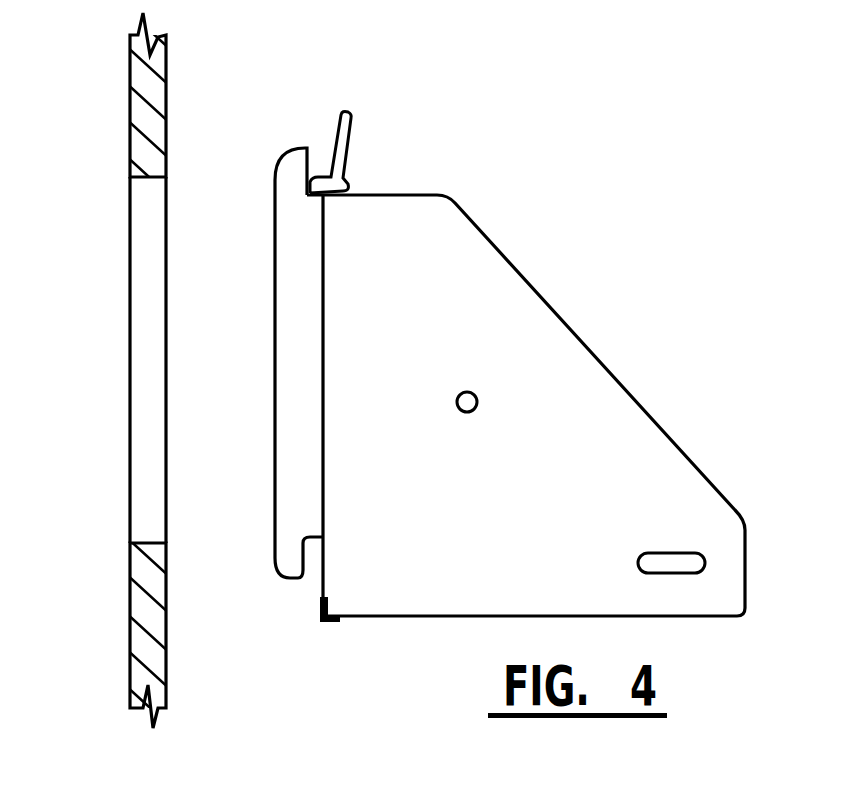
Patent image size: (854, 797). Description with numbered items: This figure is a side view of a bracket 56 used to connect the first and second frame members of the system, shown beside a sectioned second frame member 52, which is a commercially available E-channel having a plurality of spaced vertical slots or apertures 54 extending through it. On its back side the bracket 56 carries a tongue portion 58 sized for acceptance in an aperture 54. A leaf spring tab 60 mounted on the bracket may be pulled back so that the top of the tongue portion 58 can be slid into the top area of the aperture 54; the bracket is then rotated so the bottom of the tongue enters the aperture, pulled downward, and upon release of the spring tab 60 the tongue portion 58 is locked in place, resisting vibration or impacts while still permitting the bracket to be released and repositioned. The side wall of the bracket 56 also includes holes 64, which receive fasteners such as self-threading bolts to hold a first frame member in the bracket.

The second frame member 52 is at (130, 595).
The aperture 54 is at (130, 407).
The bracket 56 is at (683, 222).
The tongue portion 58 is at (290, 578).
The leaf spring tab 60 is at (353, 131).
The hole 64 is at (458, 411).